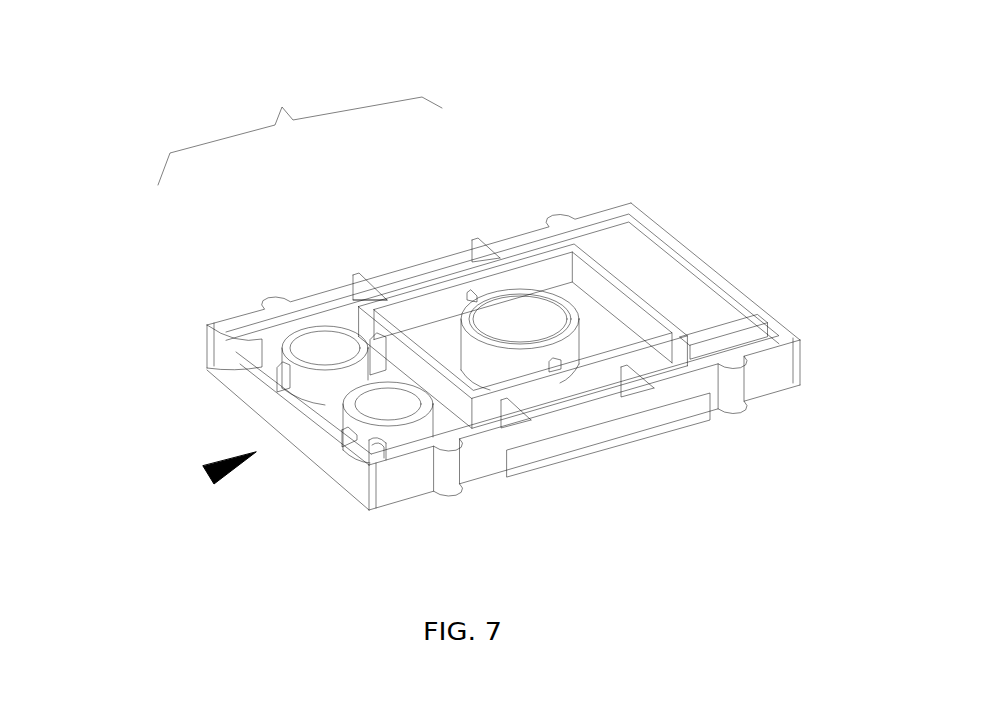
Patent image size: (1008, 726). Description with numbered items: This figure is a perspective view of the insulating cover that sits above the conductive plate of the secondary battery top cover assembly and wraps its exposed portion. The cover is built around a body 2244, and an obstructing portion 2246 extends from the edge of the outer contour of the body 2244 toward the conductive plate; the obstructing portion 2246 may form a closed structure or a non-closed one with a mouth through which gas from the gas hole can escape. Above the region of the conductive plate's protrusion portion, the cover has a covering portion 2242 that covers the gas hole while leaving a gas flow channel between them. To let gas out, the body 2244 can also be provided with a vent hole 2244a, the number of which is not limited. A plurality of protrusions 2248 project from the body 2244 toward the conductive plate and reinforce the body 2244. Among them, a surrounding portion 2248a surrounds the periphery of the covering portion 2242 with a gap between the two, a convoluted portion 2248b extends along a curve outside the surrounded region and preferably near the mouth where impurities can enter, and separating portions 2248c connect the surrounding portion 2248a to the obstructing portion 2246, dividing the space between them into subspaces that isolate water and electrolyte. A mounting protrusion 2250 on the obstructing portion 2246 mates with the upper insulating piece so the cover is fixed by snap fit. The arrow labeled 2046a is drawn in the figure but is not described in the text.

The insertion direction arrow 2046a is at (208, 472).
The covering portion 2242 is at (682, 250).
The body 2244 is at (690, 310).
The vent hole 2244a is at (400, 413).
The obstructing portion 2246 is at (533, 210).
The protrusions 2248 is at (300, 121).
The surrounding portion 2248a is at (397, 290).
The convoluted portion 2248b is at (285, 345).
The separating portions 2248c is at (485, 252).
The mounting protrusion 2250 is at (598, 442).